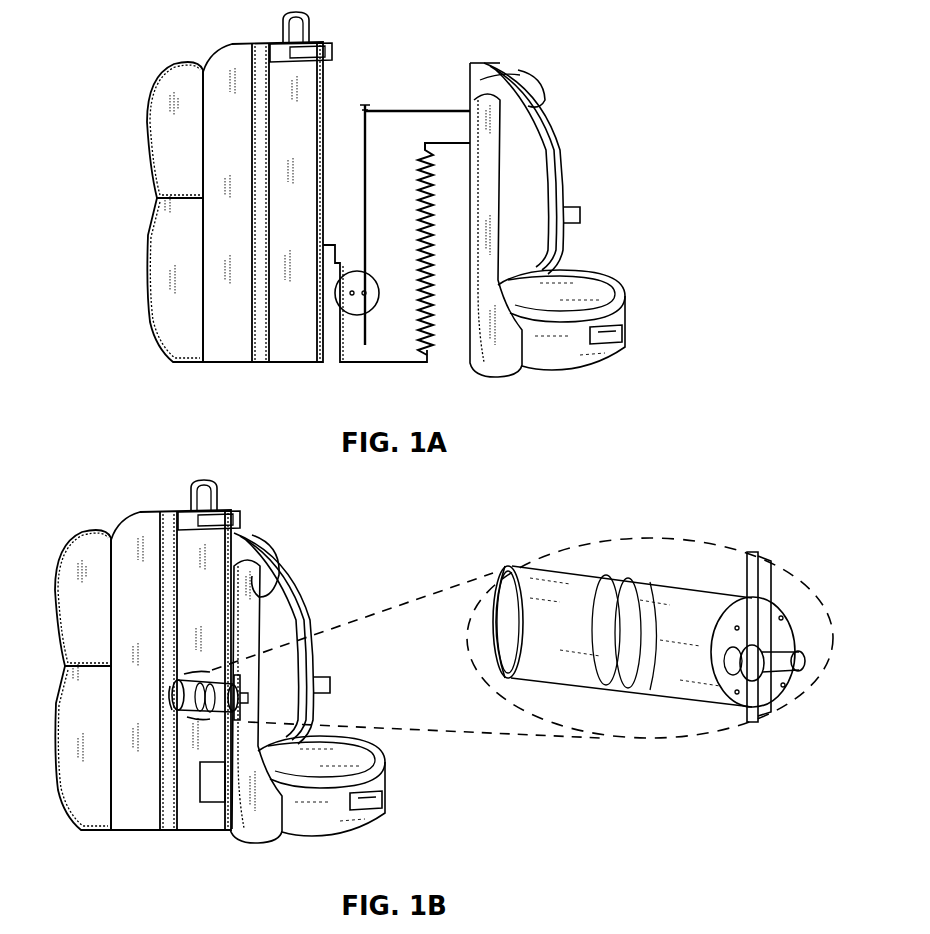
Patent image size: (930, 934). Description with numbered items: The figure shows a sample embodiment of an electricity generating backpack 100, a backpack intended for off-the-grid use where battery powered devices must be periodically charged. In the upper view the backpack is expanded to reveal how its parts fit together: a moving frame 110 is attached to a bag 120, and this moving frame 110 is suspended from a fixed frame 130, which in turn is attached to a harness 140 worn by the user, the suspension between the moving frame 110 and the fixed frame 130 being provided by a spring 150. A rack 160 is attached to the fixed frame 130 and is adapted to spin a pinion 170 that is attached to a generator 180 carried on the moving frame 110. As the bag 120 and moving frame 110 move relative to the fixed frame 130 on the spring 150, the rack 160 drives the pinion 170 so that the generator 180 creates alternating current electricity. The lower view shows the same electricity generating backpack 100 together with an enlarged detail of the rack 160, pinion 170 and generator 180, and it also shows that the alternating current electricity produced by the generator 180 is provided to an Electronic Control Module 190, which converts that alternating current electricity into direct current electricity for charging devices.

In FIG. 1A, the electricity generating backpack 100 is at (650, 22).
In FIG. 1A, the moving frame 110 is at (330, 352).
In FIG. 1A, the bag 120 is at (162, 288).
In FIG. 1A, the fixed frame 130 is at (503, 364).
In FIG. 1A, the harness 140 is at (565, 160).
In FIG. 1A, the spring 150 is at (428, 356).
In FIG. 1A, the rack 160 is at (368, 262).
In FIG. 1B, the rack 160 is at (746, 578).
In FIG. 1B, the pinion 170 is at (763, 676).
In FIG. 1A, the generator 180 is at (372, 298).
In FIG. 1B, the generator 180 is at (686, 683).
In FIG. 1B, the Electronic Control Module (ECM) 190 is at (213, 798).